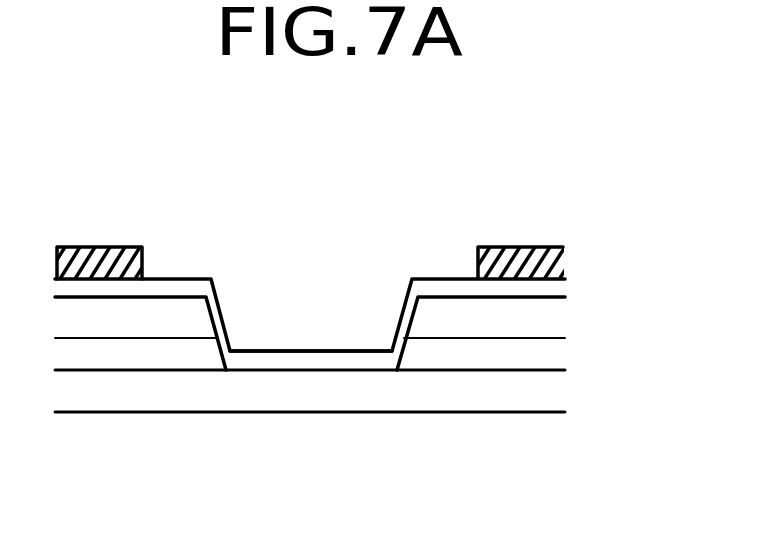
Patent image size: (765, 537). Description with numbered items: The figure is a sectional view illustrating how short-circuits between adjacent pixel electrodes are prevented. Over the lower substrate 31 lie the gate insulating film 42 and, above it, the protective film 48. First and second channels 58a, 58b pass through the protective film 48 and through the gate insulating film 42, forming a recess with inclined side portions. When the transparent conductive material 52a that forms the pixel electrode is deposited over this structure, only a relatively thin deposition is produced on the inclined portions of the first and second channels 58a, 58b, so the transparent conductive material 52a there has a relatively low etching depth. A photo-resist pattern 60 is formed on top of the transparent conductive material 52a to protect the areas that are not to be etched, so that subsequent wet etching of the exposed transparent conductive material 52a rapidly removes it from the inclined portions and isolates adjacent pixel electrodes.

The lower substrate 31 is at (545, 403).
The gate insulating film 42 is at (545, 356).
The protective film 48 is at (545, 319).
The transparent conductive material 52a is at (545, 290).
The first channel 58a is at (311, 267).
The second channel 58b is at (320, 288).
The photo-resist pattern 60 is at (556, 274).